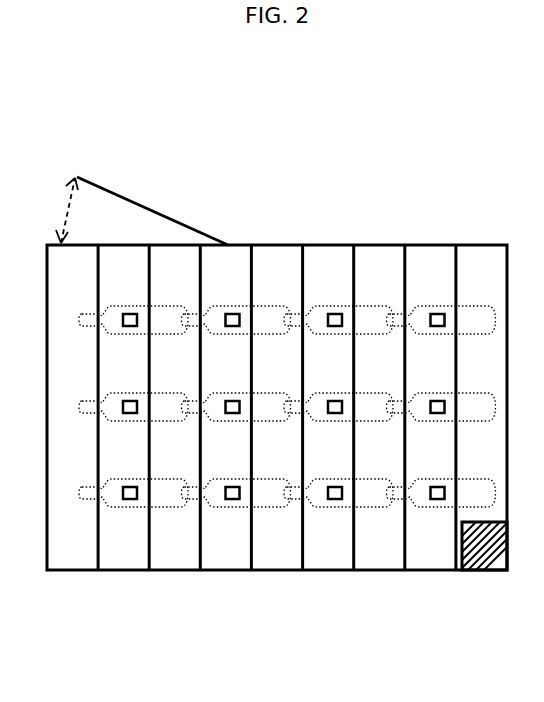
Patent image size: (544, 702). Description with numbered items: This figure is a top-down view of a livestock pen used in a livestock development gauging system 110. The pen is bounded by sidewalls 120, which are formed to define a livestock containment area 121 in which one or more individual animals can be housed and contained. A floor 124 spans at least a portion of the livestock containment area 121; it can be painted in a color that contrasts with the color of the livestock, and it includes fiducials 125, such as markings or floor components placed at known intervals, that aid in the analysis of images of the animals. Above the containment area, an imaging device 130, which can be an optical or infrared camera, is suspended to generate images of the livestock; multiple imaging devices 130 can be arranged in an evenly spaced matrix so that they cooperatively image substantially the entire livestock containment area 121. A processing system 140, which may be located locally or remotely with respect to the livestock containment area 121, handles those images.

The livestock development gauging system 110 is at (453, 188).
The sidewalls 120 is at (188, 225).
The livestock containment area 121 is at (143, 455).
The floor 124 is at (375, 262).
The fiducials 125 is at (352, 547).
The imaging device 130 is at (235, 500).
The processing system 140 is at (482, 545).